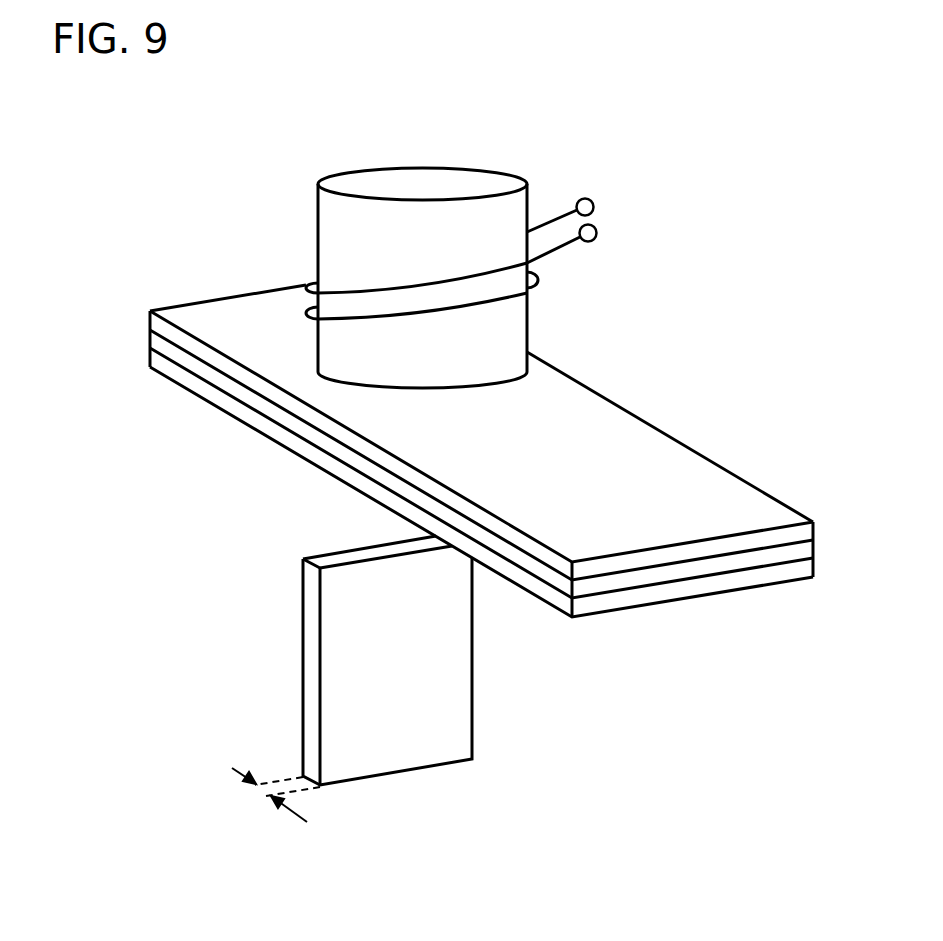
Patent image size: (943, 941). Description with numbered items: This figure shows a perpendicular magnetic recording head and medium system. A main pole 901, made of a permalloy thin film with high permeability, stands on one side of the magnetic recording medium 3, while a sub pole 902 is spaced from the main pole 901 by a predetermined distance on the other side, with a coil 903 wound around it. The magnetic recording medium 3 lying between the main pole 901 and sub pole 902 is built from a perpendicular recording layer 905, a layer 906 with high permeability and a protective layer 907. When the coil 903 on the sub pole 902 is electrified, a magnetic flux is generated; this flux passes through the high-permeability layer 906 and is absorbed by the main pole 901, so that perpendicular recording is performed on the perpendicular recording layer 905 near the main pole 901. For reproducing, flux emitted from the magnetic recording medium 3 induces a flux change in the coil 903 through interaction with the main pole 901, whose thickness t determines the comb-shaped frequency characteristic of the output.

The magnetic recording medium 3 is at (776, 488).
The main pole 901 is at (352, 679).
The sub pole 902 is at (422, 278).
The coil 903 is at (550, 216).
The perpendicular recording layer 905 is at (167, 360).
The layer with high permeability 906 is at (148, 341).
The protective layer 907 is at (150, 314).